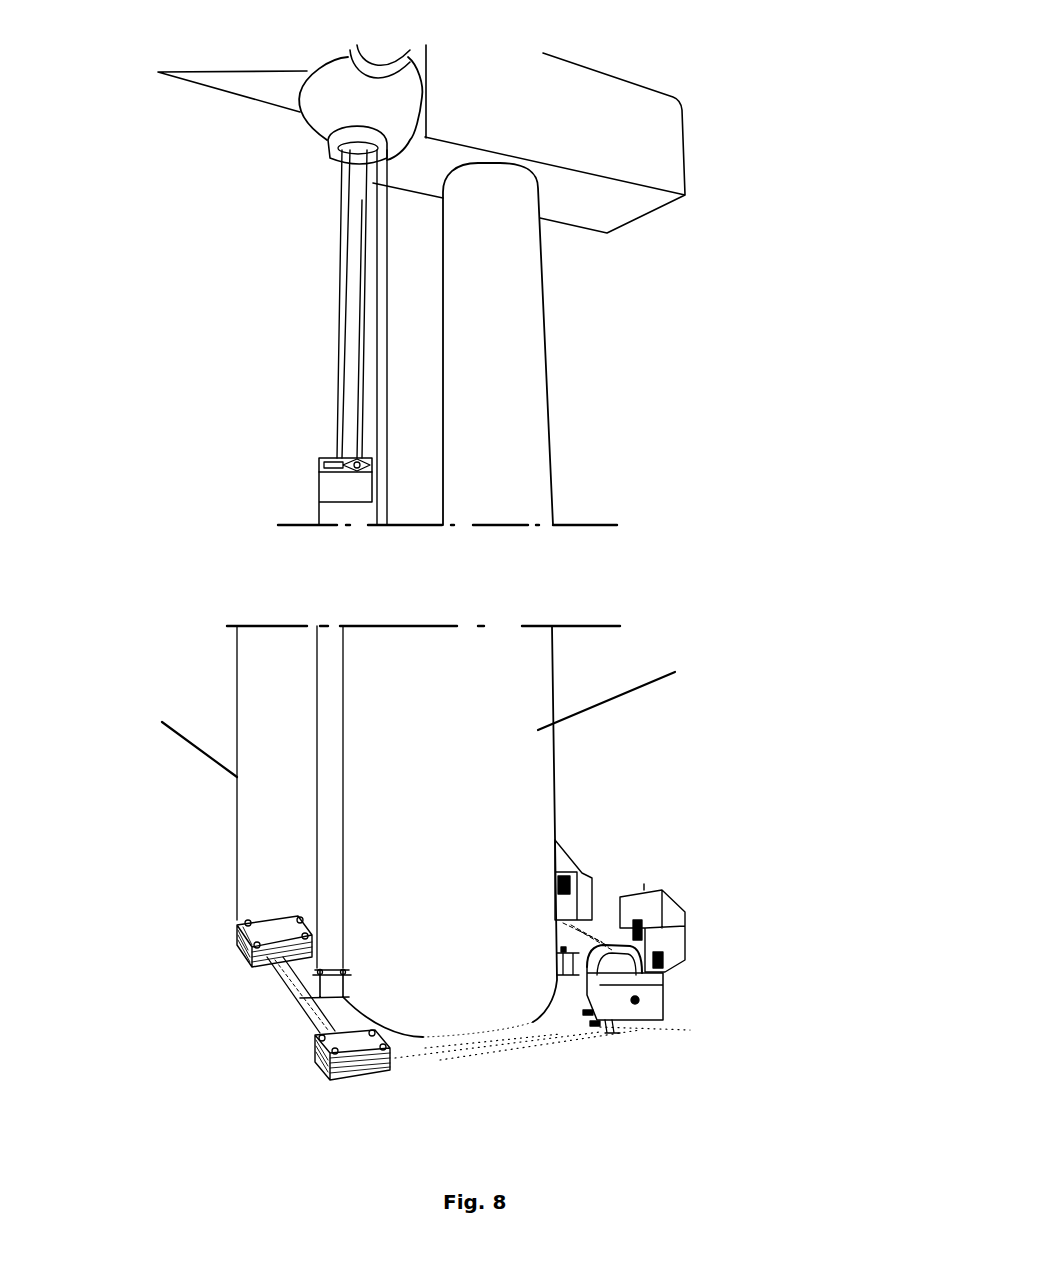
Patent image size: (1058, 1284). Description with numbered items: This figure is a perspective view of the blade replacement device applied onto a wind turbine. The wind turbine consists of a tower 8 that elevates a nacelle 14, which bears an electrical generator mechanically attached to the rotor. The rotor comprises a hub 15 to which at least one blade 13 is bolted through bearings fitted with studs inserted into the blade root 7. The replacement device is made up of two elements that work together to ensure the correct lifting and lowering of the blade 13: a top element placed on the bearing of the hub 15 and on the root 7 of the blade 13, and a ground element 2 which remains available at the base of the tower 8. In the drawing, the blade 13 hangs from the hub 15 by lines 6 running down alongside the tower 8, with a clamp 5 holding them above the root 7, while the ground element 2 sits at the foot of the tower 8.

The ground element 2 is at (600, 1066).
The clamp 5 is at (320, 468).
The cable 6 is at (340, 273).
The blade root 7 is at (332, 487).
The tower 8 is at (520, 372).
The blade 13 is at (240, 90).
The nacelle 14 is at (573, 135).
The hub 15 is at (328, 95).